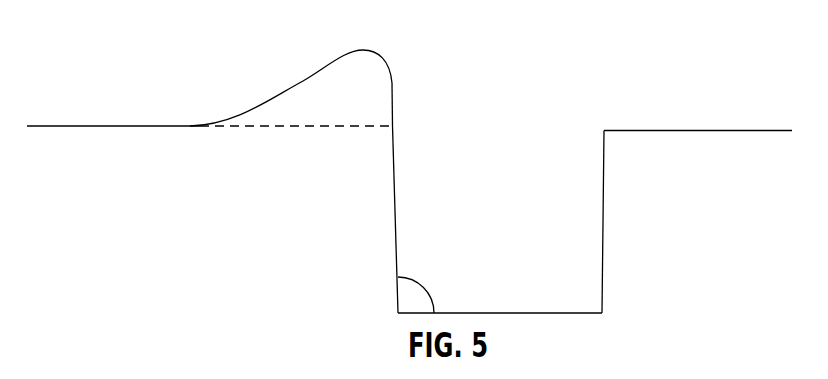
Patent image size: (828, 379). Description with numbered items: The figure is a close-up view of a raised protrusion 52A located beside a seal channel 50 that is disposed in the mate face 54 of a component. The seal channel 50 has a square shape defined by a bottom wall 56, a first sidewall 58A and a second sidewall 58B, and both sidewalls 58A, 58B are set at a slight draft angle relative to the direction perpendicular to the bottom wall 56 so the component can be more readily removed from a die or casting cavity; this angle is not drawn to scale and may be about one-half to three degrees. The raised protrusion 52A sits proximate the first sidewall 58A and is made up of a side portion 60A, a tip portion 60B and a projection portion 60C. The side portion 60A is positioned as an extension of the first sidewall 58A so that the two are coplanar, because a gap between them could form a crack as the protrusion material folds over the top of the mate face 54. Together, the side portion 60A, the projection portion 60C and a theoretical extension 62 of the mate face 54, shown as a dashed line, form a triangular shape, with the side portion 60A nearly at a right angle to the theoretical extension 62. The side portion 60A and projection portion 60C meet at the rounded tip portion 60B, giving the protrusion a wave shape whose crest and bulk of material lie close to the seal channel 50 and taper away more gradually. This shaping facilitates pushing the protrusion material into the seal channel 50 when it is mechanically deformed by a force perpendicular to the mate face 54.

The seal channel 50 is at (415, 183).
The raised protrusion 52A is at (331, 71).
The mate face 54 is at (107, 125).
The bottom wall 56 is at (567, 313).
The first sidewall 58A is at (395, 243).
The second sidewall 58B is at (603, 242).
The side portion 60A is at (392, 98).
The tip portion 60B is at (373, 50).
The projection portion 60C is at (307, 78).
The theoretical extension 62 is at (310, 128).